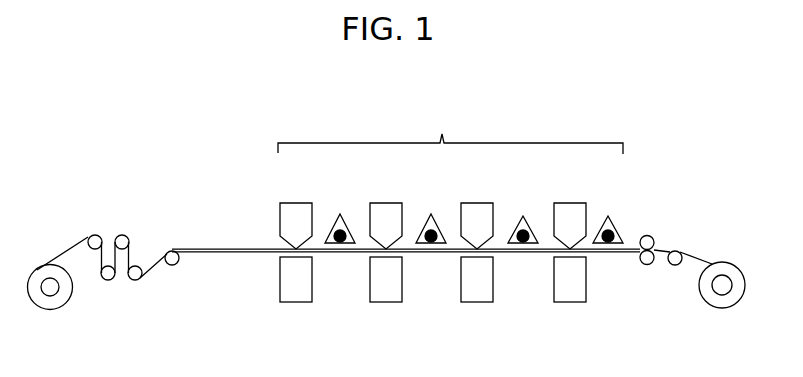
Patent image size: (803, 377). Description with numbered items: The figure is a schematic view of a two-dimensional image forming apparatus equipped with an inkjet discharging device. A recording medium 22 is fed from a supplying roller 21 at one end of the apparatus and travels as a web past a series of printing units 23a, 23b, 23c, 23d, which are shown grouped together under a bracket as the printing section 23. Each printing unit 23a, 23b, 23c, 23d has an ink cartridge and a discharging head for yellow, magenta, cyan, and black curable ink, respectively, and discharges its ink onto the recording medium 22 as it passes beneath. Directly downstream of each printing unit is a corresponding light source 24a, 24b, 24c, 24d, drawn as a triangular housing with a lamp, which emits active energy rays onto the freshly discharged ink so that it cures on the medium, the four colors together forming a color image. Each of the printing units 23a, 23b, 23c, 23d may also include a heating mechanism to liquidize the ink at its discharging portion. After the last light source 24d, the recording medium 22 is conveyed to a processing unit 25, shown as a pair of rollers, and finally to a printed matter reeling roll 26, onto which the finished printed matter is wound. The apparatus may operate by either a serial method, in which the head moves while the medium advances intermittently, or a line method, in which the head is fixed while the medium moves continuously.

The supplying roller 21 is at (48, 292).
The recording medium 22 is at (210, 248).
The coating unit 23 is at (450, 131).
The printing unit 23a is at (296, 210).
The printing unit 23b is at (386, 210).
The printing unit 23c is at (477, 210).
The printing unit 23d is at (570, 210).
The light source 24a is at (341, 220).
The light source 24b is at (432, 220).
The light source 24c is at (524, 222).
The light source 24d is at (609, 222).
The processing unit 25 is at (649, 226).
The printed matter reeling roll 26 is at (718, 290).